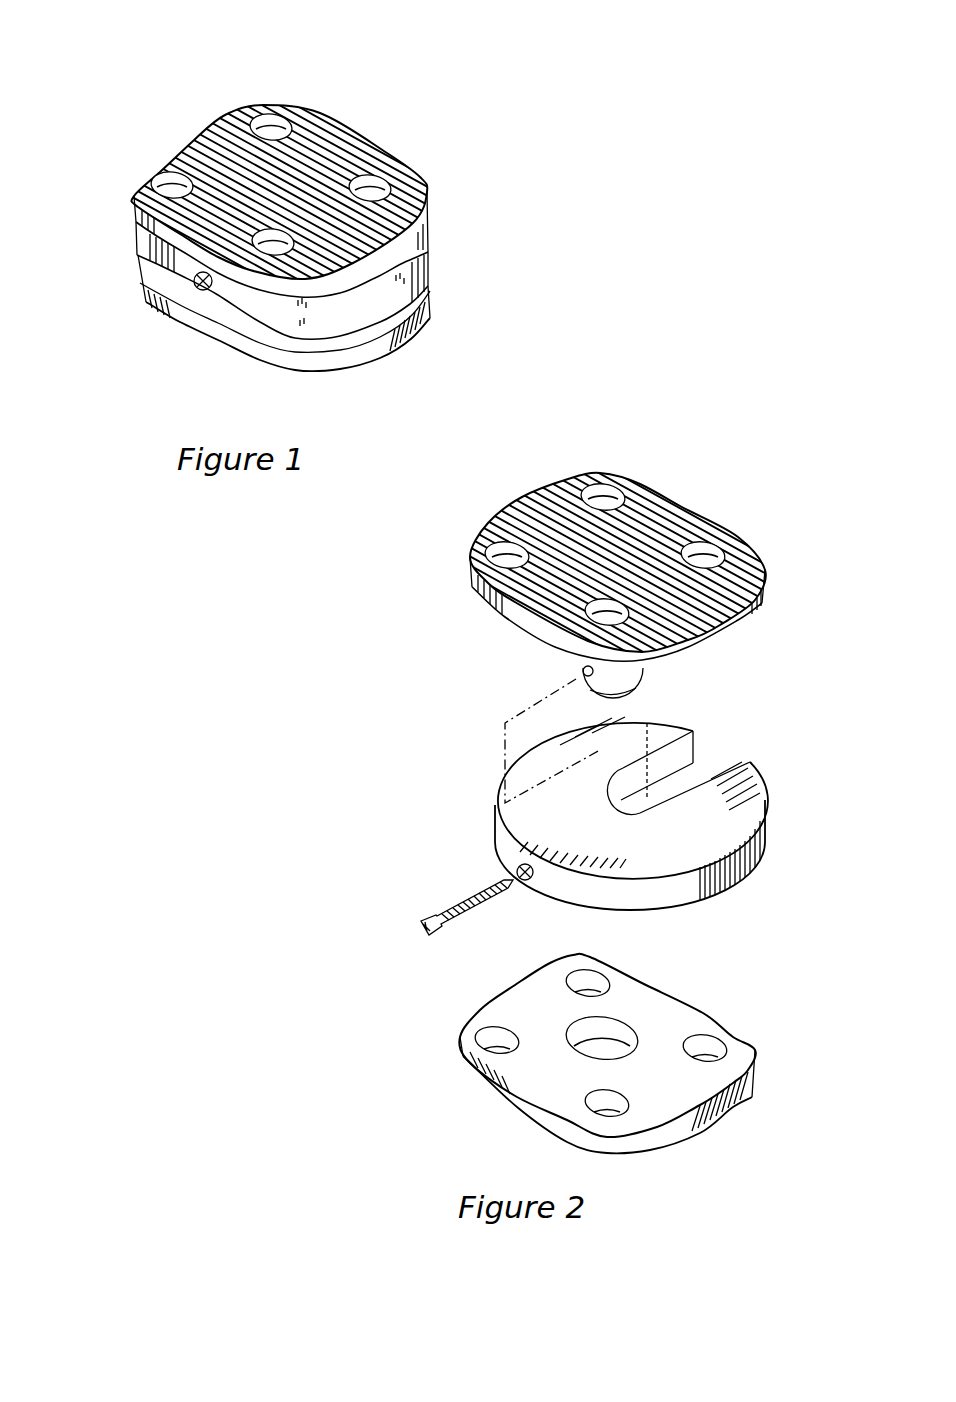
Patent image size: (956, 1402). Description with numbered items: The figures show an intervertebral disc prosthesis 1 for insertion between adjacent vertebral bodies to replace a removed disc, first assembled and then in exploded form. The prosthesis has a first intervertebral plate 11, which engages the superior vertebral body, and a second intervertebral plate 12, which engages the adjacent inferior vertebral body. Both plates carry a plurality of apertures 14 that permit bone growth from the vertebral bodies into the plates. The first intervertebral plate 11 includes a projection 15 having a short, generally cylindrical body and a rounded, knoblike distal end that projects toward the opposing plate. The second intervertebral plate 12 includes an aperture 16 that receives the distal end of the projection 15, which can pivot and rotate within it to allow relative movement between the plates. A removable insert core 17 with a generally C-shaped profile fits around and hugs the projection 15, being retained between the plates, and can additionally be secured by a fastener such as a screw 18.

In FIG. 1, the intervertebral disc prosthesis 1 is at (130, 92).
In FIG. 2, the intervertebral disc prosthesis 1 is at (470, 497).
In FIG. 1, the first intervertebral plate 11 is at (428, 186).
In FIG. 2, the first intervertebral plate 11 is at (766, 552).
In FIG. 1, the second intervertebral plate 12 is at (353, 364).
In FIG. 2, the second intervertebral plate 12 is at (690, 1136).
In FIG. 1, the apertures 14 is at (274, 112).
In FIG. 2, the apertures 14 is at (603, 493).
In FIG. 2, the projection 15 is at (584, 672).
In FIG. 2, the aperture 16 is at (631, 1037).
In FIG. 1, the removable insert core 17 is at (252, 322).
In FIG. 2, the removable insert core 17 is at (765, 790).
In FIG. 1, the screw 18 is at (196, 288).
In FIG. 2, the screw 18 is at (432, 920).